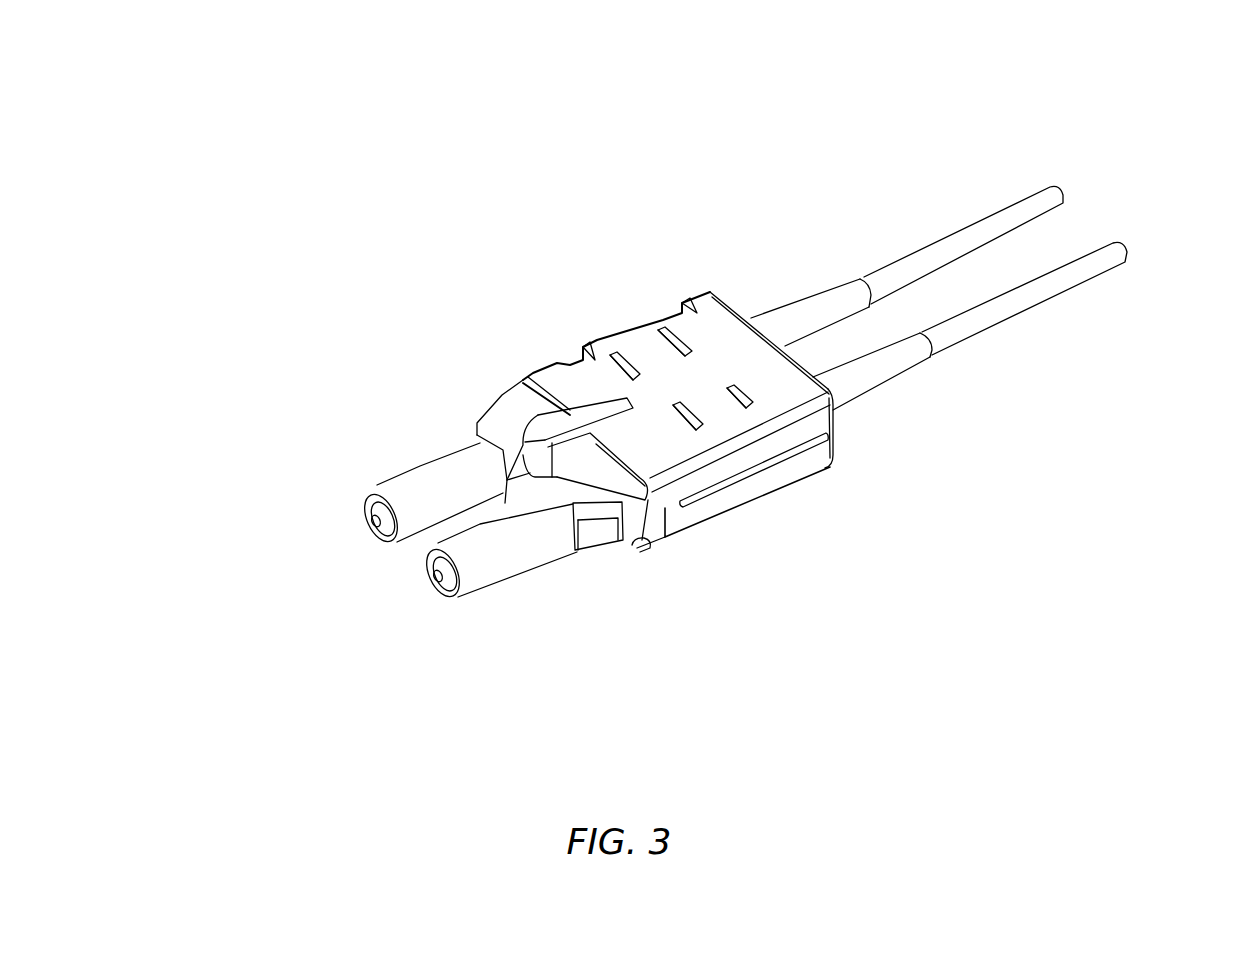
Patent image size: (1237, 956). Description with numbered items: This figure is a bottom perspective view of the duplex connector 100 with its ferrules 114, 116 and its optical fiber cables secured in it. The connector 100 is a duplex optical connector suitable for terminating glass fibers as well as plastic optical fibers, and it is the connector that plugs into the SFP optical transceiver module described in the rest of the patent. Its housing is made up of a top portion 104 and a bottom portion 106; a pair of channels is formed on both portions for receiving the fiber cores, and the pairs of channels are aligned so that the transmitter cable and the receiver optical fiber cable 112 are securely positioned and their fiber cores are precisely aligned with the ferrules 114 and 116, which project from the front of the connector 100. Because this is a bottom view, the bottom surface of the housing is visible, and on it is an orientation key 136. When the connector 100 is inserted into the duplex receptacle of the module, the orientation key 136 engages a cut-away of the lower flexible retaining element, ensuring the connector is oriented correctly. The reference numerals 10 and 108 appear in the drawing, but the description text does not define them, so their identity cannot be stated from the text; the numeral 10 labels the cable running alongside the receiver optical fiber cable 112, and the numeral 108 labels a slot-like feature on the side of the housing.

The duplex connector 100 is at (332, 193).
The optical fiber cable 10 is at (1002, 210).
The receiver optical fiber cable 112 is at (1060, 293).
The bottom portion 106 is at (710, 315).
The top portion 104 is at (714, 522).
The slot 108 is at (793, 466).
The orientation key 136 is at (538, 420).
The ferrule 114 is at (312, 548).
The ferrule 116 is at (398, 597).